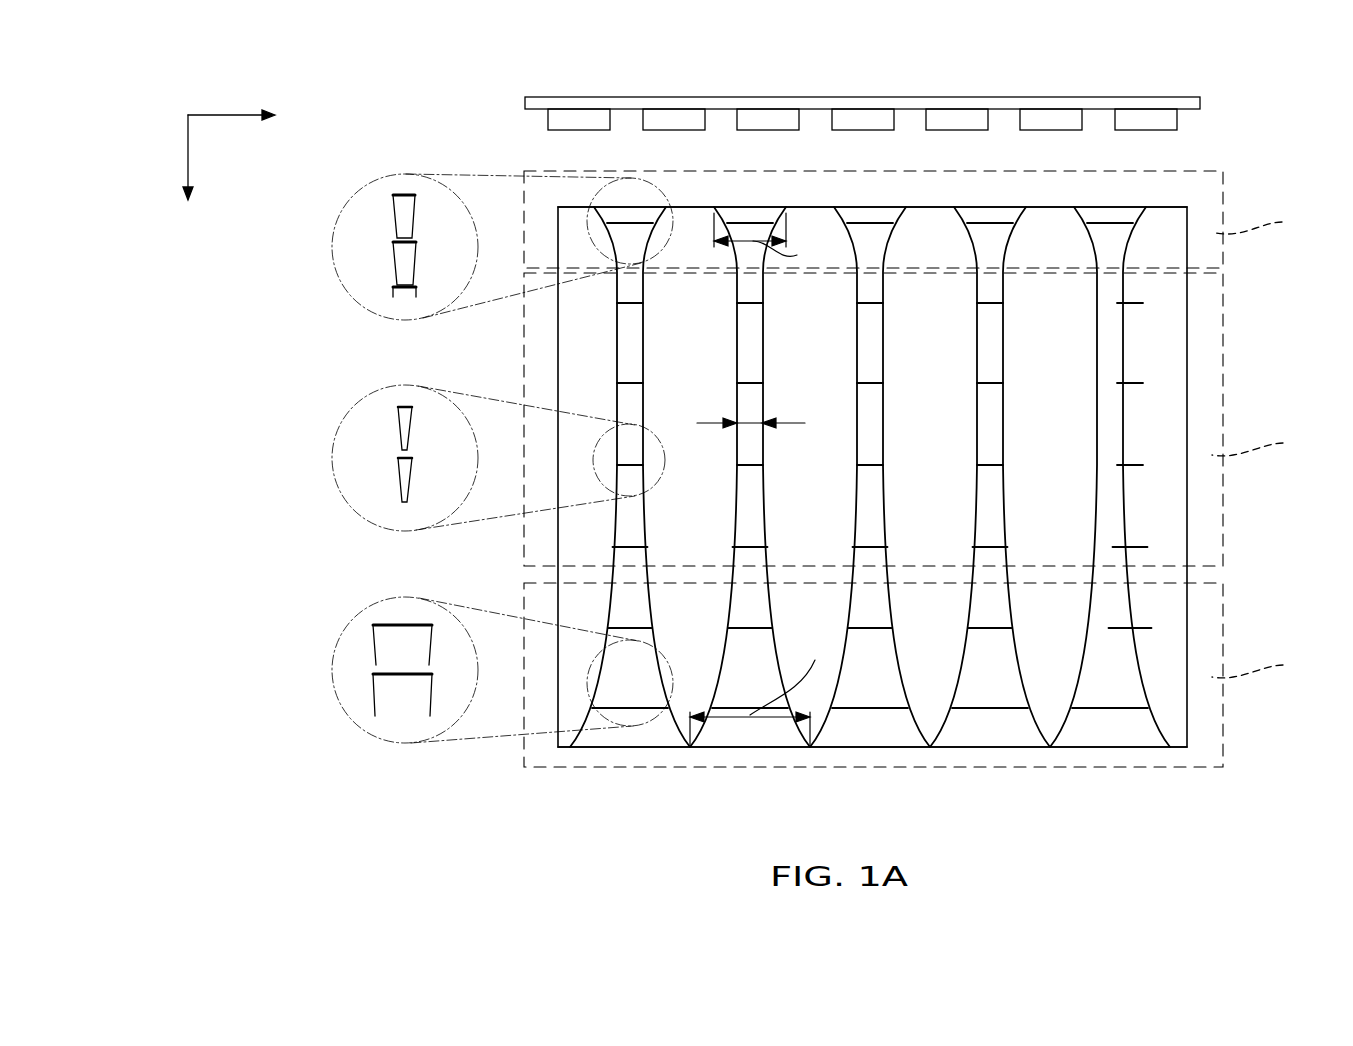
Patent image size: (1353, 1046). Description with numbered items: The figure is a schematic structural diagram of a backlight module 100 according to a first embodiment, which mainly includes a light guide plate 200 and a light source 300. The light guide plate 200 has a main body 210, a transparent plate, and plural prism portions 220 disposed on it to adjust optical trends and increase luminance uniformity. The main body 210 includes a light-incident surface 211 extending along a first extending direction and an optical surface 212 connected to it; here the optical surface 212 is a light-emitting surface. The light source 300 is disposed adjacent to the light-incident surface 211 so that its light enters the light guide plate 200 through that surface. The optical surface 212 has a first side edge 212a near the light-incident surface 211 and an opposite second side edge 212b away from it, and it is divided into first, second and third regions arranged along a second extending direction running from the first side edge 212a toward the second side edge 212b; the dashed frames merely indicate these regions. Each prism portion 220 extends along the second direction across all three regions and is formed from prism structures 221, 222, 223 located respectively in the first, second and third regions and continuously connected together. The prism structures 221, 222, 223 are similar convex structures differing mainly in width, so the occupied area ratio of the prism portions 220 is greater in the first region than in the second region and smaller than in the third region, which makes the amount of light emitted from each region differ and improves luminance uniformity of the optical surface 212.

The backlight module 100 is at (386, 77).
The light guide plate 200 is at (543, 180).
The main body 210 is at (1194, 222).
The light-incident surface 211 is at (826, 182).
The optical surface 212 is at (1168, 378).
The first side edge 212a is at (1113, 207).
The second side edge 212b is at (1115, 750).
The prism portions 220 is at (735, 672).
The prism structures 221 is at (403, 260).
The prism structures 222 is at (402, 427).
The prism structures 223 is at (388, 643).
The light source 300 is at (1000, 102).